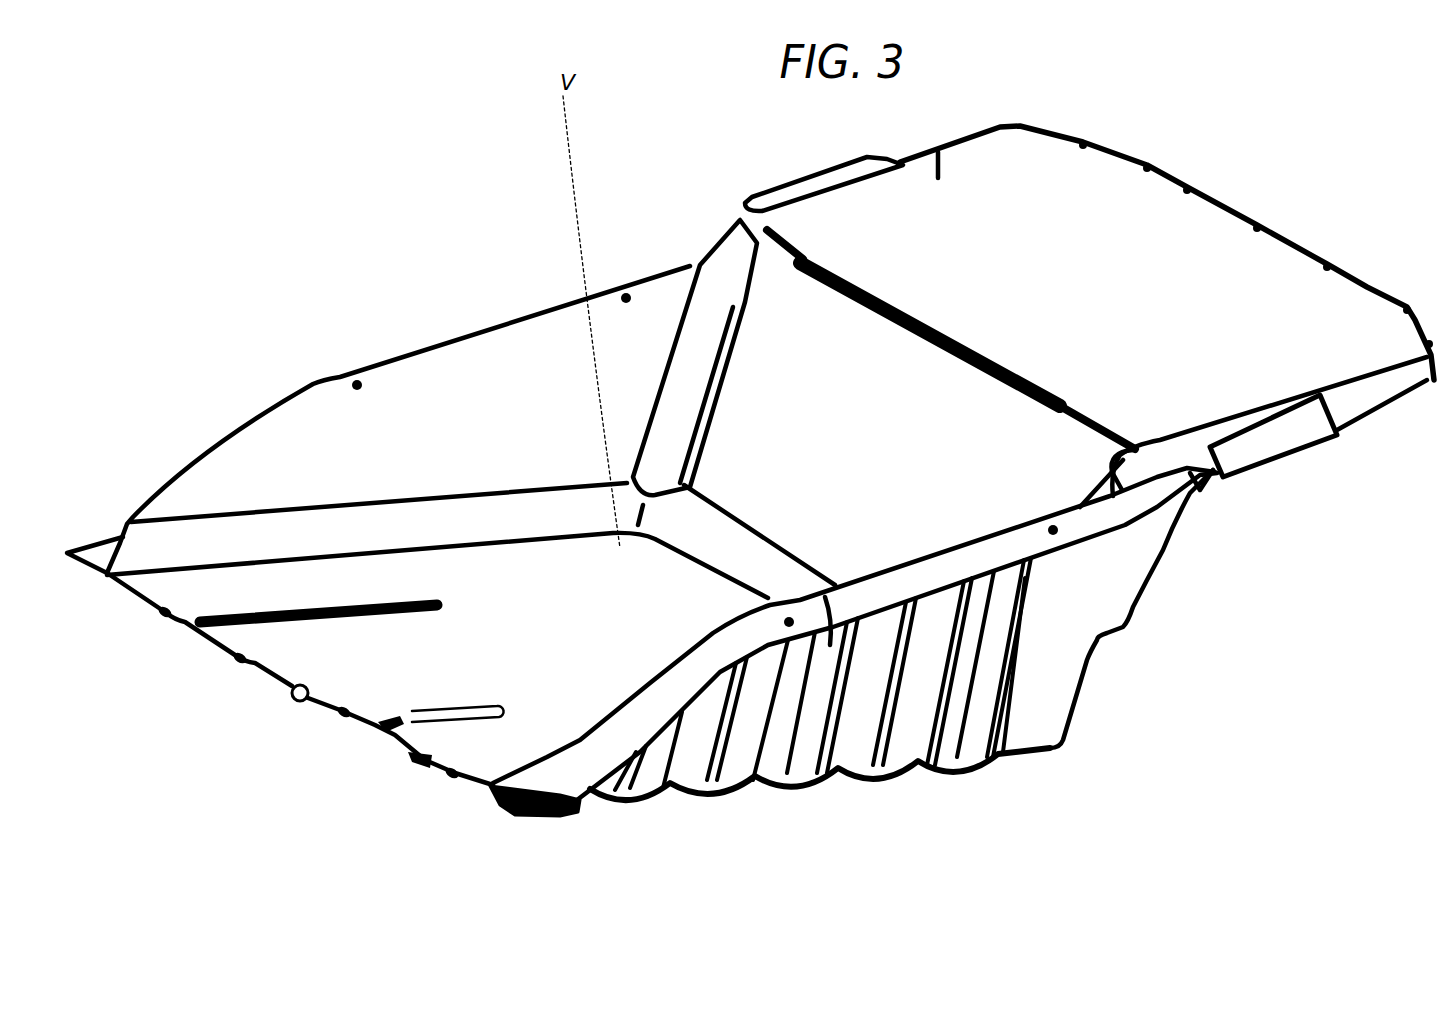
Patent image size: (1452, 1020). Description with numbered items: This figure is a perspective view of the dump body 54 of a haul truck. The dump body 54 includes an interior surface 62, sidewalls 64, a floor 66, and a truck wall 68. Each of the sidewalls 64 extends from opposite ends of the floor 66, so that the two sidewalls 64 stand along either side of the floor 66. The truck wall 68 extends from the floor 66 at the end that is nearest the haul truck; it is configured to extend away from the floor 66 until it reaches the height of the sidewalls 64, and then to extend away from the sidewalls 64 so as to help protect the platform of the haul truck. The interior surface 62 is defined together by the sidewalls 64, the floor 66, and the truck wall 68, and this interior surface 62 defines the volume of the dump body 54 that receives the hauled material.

The dump body 54 is at (1127, 597).
The interior surface 62 is at (510, 742).
The sidewall 64 is at (457, 360).
The floor 66 is at (373, 677).
The truck wall 68 is at (828, 453).